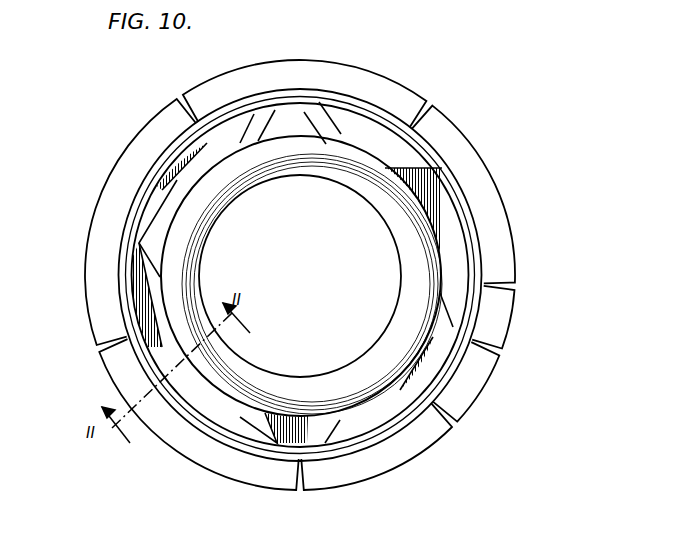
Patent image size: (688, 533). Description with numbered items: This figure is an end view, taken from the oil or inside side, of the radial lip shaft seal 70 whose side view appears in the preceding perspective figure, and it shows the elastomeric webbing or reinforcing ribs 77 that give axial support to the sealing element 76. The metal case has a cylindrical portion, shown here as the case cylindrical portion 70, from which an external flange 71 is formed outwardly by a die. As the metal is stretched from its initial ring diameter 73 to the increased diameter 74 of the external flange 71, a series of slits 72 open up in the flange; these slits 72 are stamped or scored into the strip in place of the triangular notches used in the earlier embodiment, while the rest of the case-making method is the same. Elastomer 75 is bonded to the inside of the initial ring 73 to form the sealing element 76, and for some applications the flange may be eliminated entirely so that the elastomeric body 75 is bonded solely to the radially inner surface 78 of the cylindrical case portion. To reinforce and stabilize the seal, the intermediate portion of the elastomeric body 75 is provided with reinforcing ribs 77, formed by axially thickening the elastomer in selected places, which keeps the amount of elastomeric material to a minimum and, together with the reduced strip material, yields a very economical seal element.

The radial lip shaft seal 70 is at (132, 211).
The external flange 71 is at (463, 393).
The slits 72 is at (497, 350).
The initial ring diameter 73 is at (483, 285).
The increased diameter of the external flange 74 is at (508, 216).
The elastomer 75 is at (290, 376).
The sealing element 76 is at (207, 238).
The reinforcing ribs 77 is at (325, 122).
The radially inner surface 78 is at (185, 153).